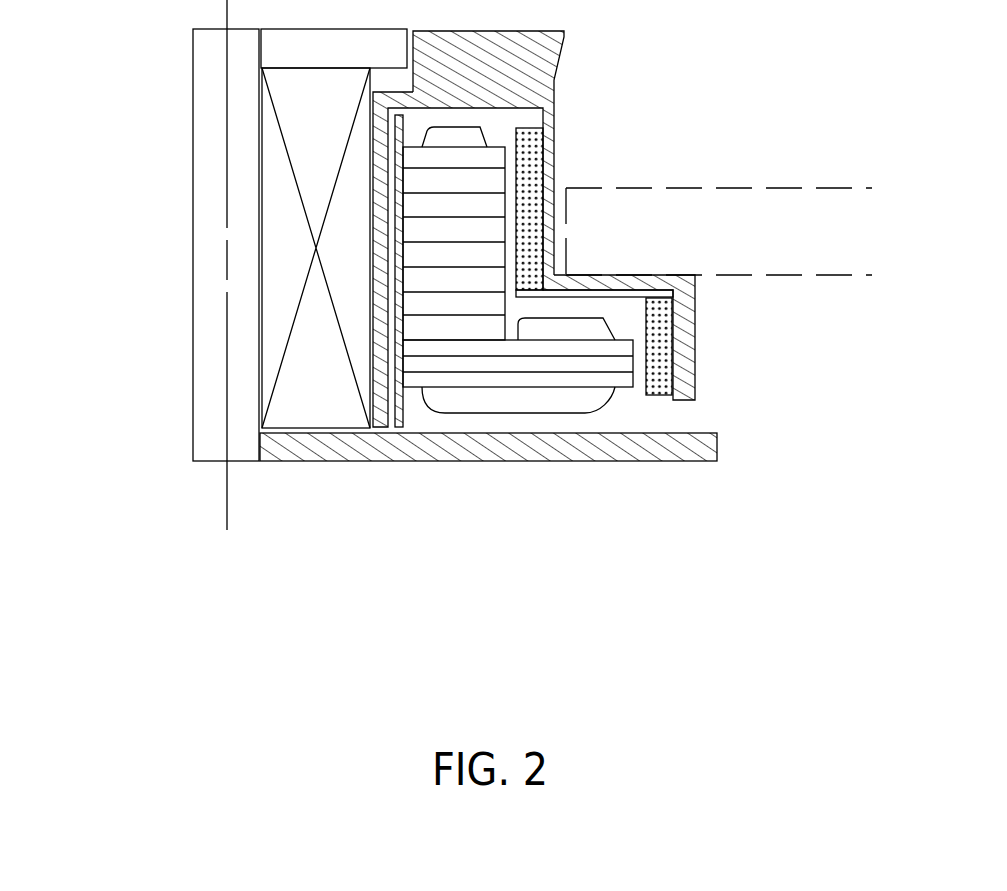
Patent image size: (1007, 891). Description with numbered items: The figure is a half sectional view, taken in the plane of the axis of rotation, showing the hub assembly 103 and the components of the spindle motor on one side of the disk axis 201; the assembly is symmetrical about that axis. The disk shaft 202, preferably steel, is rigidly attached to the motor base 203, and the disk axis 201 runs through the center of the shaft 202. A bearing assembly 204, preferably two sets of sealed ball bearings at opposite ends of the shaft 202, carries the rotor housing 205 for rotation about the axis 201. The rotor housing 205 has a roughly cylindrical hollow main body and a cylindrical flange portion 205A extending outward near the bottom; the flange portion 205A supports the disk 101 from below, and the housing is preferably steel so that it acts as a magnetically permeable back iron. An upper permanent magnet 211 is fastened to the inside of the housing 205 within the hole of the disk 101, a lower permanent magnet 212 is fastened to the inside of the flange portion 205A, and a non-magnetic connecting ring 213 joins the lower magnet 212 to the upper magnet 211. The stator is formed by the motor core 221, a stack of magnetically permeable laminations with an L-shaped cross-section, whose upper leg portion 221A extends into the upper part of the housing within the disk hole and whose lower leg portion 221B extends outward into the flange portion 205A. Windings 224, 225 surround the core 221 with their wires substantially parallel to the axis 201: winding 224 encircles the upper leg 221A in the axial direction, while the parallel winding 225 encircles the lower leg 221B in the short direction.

The disk 101 is at (847, 264).
The hub assembly 103 is at (576, 223).
The disk axis 201 is at (227, 514).
The disk shaft 202 is at (202, 405).
The motor base 203 is at (562, 462).
The bearing assembly 204 is at (297, 325).
The rotor housing 205 is at (565, 44).
The flange portion 205A is at (697, 322).
The upper permanent magnet 211 is at (537, 213).
The lower permanent magnet 212 is at (664, 352).
The connecting ring 213 is at (608, 294).
The motor core 221 is at (335, 253).
The upper leg portion 221A is at (433, 250).
The lower leg portion 221B is at (515, 358).
The winding 224 is at (471, 134).
The winding 225 is at (598, 332).